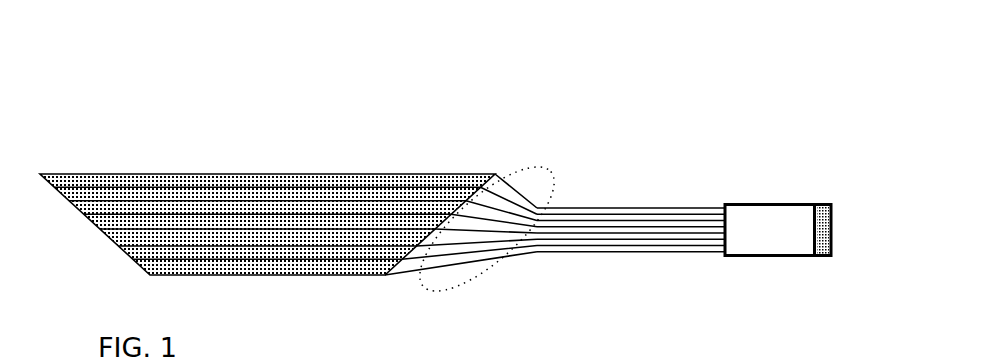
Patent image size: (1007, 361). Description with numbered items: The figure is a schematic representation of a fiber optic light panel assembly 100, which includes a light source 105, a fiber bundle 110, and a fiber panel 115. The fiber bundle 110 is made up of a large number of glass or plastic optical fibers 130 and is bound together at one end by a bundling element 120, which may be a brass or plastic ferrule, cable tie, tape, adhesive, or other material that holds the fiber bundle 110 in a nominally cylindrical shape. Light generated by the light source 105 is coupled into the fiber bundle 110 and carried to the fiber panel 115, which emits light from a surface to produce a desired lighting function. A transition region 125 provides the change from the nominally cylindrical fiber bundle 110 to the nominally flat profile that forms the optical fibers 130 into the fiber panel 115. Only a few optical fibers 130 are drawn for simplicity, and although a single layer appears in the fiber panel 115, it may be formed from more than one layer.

The fiber optic light panel assembly 100 is at (469, 89).
The light source 105 is at (828, 203).
The fiber bundle 110 is at (650, 200).
The fiber panel 115 is at (245, 170).
The bundling element 120 is at (760, 203).
The transition region 125 is at (552, 173).
The optical fibers 130 is at (243, 247).